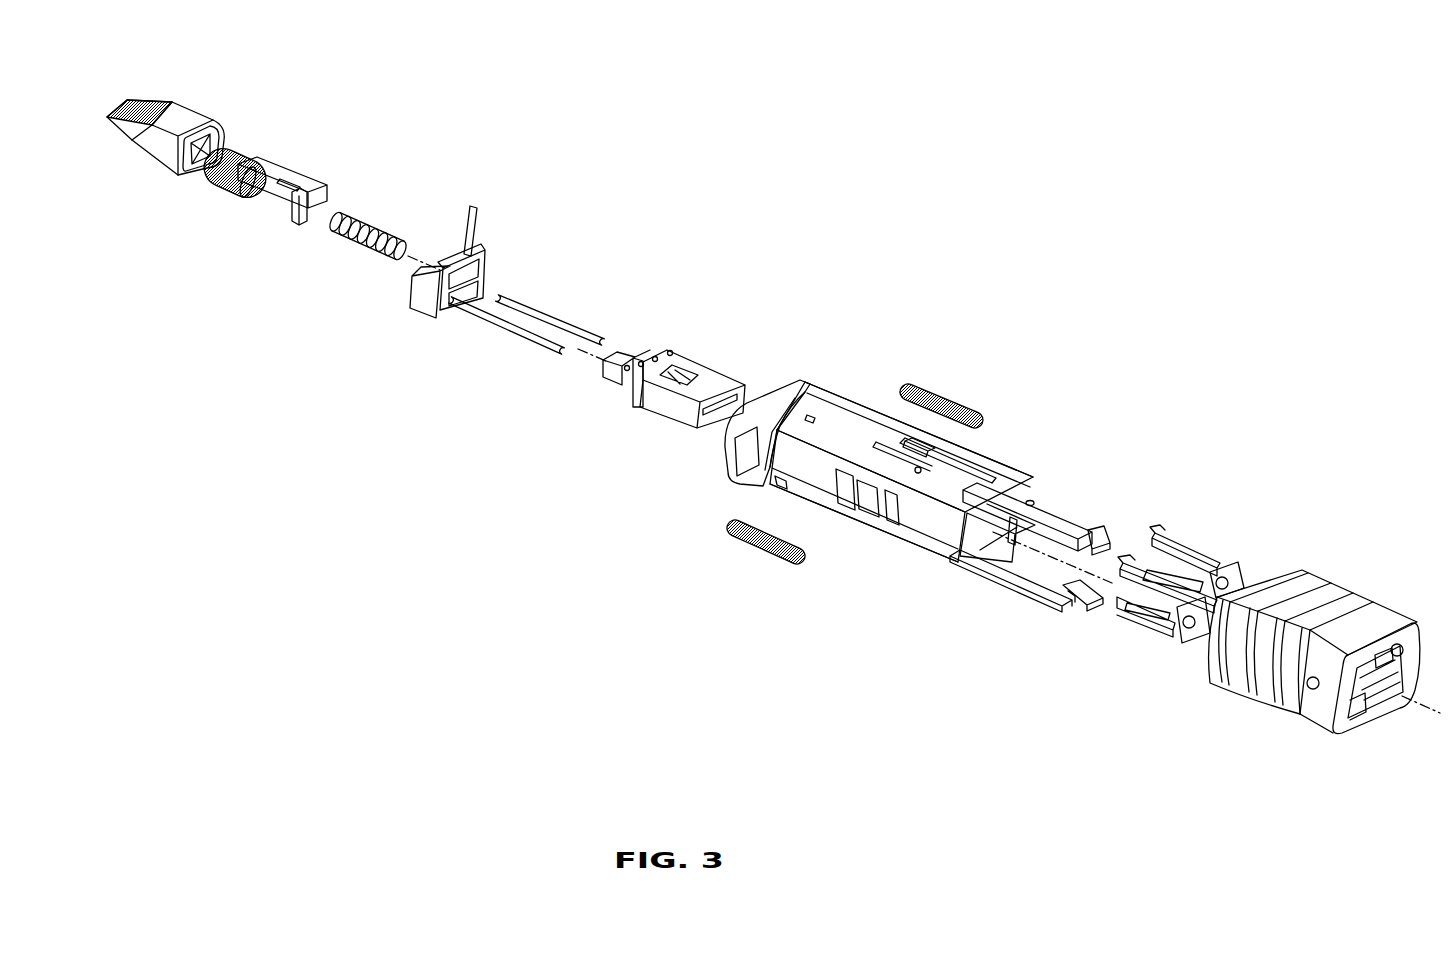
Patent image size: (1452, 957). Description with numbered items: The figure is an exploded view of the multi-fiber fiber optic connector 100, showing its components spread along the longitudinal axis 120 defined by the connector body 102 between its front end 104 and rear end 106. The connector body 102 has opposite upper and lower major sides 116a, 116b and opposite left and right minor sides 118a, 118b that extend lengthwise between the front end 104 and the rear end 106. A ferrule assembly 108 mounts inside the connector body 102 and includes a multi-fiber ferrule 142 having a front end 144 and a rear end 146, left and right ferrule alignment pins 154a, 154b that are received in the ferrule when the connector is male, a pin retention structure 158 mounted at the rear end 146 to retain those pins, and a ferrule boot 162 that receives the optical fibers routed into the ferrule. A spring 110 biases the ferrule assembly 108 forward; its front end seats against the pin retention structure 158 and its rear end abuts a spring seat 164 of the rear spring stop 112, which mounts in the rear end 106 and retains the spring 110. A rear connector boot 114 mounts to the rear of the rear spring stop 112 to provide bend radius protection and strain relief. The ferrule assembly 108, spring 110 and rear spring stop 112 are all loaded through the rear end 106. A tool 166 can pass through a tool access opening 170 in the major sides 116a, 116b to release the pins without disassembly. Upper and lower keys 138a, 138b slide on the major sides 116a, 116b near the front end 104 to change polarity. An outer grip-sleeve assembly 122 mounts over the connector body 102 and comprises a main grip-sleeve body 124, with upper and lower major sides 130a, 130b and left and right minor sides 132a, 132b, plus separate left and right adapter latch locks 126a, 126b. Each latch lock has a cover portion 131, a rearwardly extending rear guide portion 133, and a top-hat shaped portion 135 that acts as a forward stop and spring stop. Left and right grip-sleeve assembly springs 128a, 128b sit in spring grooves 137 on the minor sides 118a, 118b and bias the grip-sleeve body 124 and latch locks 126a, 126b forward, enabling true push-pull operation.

The multi-fiber fiber optic connector 100 is at (866, 250).
The connector body 102 is at (883, 528).
The front end 104 is at (953, 562).
The rear end 106 is at (728, 468).
The ferrule assembly 108 is at (412, 128).
The spring 110 is at (376, 222).
The rear spring stop 112 is at (290, 175).
The rear connector boot 114 is at (194, 110).
The upper major side 116a is at (845, 410).
The lower major side 116b is at (912, 545).
The left minor side 118a is at (997, 468).
The right minor side 118b is at (852, 524).
The longitudinal axis 120 is at (98, 108).
The outer grip-sleeve assembly 122 is at (1148, 408).
The main grip-sleeve body 124 is at (1307, 720).
The left adapter latch lock 126a is at (1197, 557).
The right adapter latch lock 126b is at (1127, 632).
The left grip-sleeve assembly spring 128a is at (938, 392).
The right grip-sleeve assembly spring 128b is at (763, 543).
The upper major side 130a is at (1305, 595).
The lower major side 130b is at (1283, 705).
The cover portion 131 is at (1200, 637).
The left minor side 132a is at (1362, 598).
The right minor side 132b is at (1227, 670).
The rear guide portion 133 is at (1123, 615).
The top-hat shaped portion 135 is at (1243, 575).
The spring groove 137 is at (770, 480).
The upper key 138a is at (1058, 513).
The lower key 138b is at (1020, 594).
The multi-fiber ferrule 142 is at (713, 368).
The front end 144 is at (693, 423).
The rear end 146 is at (627, 397).
The left ferrule alignment pin 154a is at (553, 314).
The right ferrule alignment pin 154b is at (513, 337).
The pin retention structure 158 is at (414, 323).
The ferrule boot 162 is at (632, 353).
The spring seat 164 is at (290, 208).
The tool 166 is at (480, 223).
The tool access opening 170 is at (930, 456).